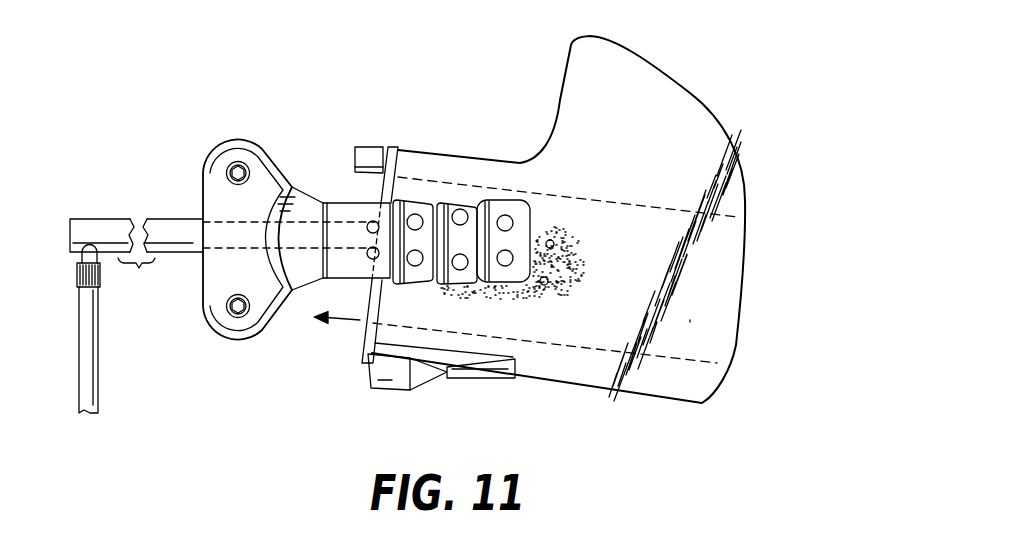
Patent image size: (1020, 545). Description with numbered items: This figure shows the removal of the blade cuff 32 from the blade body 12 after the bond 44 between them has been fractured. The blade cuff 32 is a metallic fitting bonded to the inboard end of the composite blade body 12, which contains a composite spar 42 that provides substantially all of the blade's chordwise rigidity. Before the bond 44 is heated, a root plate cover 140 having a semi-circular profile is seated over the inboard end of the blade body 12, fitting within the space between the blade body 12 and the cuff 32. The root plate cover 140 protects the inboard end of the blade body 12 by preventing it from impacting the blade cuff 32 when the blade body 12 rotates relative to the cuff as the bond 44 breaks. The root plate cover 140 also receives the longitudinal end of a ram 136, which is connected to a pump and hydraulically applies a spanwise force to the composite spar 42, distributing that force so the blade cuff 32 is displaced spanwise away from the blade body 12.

The blade body 12 is at (686, 384).
The blade cuff 32 is at (345, 210).
The composite spar 42 is at (671, 357).
The bond 44 is at (570, 262).
The ram 136 is at (168, 230).
The root plate cover 140 is at (373, 157).